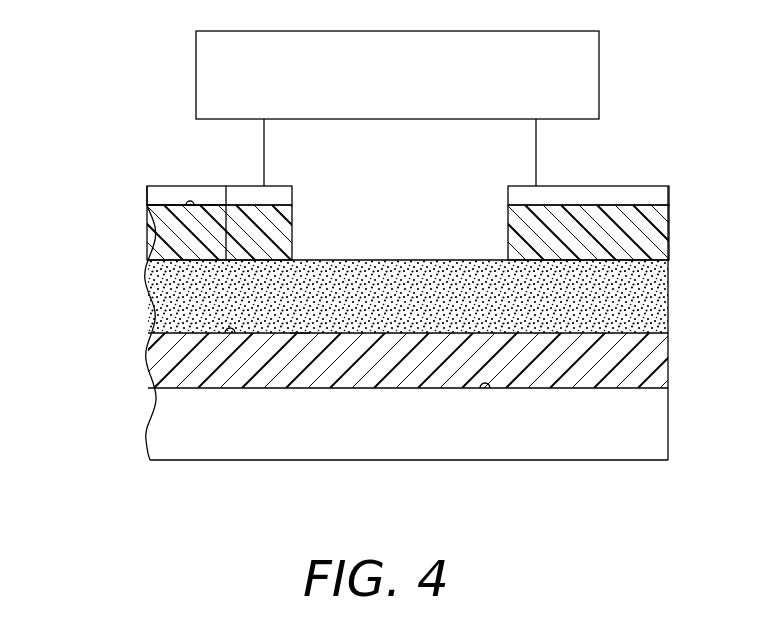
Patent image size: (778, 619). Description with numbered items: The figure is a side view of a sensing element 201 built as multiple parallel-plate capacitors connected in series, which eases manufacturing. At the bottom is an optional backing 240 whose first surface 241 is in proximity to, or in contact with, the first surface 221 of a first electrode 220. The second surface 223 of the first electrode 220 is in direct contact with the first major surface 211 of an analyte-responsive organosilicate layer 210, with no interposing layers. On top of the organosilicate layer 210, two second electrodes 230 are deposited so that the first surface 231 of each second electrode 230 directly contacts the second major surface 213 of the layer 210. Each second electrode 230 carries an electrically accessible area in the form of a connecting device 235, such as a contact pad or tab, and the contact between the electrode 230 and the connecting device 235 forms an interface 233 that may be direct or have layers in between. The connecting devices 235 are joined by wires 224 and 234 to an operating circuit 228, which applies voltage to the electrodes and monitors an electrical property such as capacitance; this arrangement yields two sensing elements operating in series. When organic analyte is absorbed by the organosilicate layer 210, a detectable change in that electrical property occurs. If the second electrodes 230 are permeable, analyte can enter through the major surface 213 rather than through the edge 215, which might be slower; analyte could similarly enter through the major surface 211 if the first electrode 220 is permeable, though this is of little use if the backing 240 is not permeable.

The sensing element 201 is at (112, 124).
The operating circuit 228 is at (599, 85).
The wire 234 is at (265, 150).
The wire 224 is at (537, 148).
The connecting device 235 is at (162, 196).
The second electrode 230 is at (152, 232).
The first surface of second electrode 231 is at (226, 200).
The interface 233 is at (190, 210).
The second major surface 213 is at (403, 260).
The analyte-responsive organosilicate layer 210 is at (418, 260).
The edge 215 is at (660, 305).
The first electrode 220 is at (398, 422).
The second surface of first electrode 223 is at (300, 336).
The first major surface 211 is at (223, 340).
The first surface of first electrode 221 is at (478, 392).
The backing 240 is at (372, 349).
The first surface of backing 241 is at (556, 390).